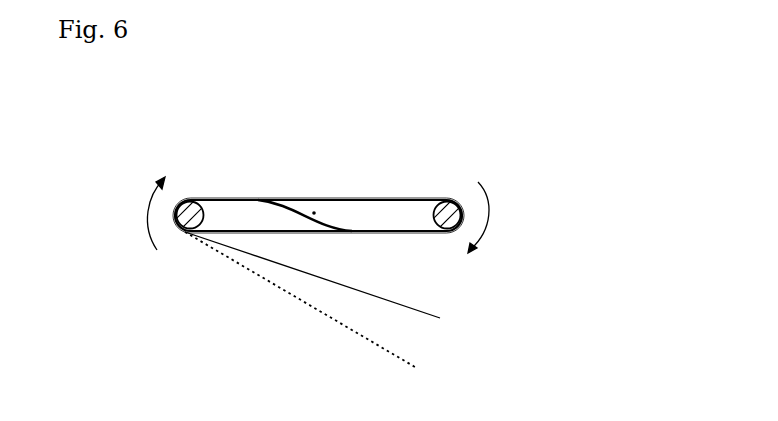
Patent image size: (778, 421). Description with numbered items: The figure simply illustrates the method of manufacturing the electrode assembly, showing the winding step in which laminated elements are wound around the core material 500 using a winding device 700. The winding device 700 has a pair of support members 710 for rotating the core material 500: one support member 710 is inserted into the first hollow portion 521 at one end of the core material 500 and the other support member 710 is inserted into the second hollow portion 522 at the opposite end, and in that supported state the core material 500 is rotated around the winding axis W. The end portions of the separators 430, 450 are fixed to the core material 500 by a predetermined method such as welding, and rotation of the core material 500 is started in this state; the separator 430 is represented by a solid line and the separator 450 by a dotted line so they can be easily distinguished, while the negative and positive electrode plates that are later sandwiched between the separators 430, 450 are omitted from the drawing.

The winding device 700 is at (158, 133).
The core material 500 is at (333, 196).
The first hollow portion 521 is at (231, 210).
The second hollow portion 522 is at (415, 210).
The support member 710 is at (191, 201).
The winding axis W is at (316, 213).
The separator 430 is at (320, 275).
The separator 450 is at (355, 329).